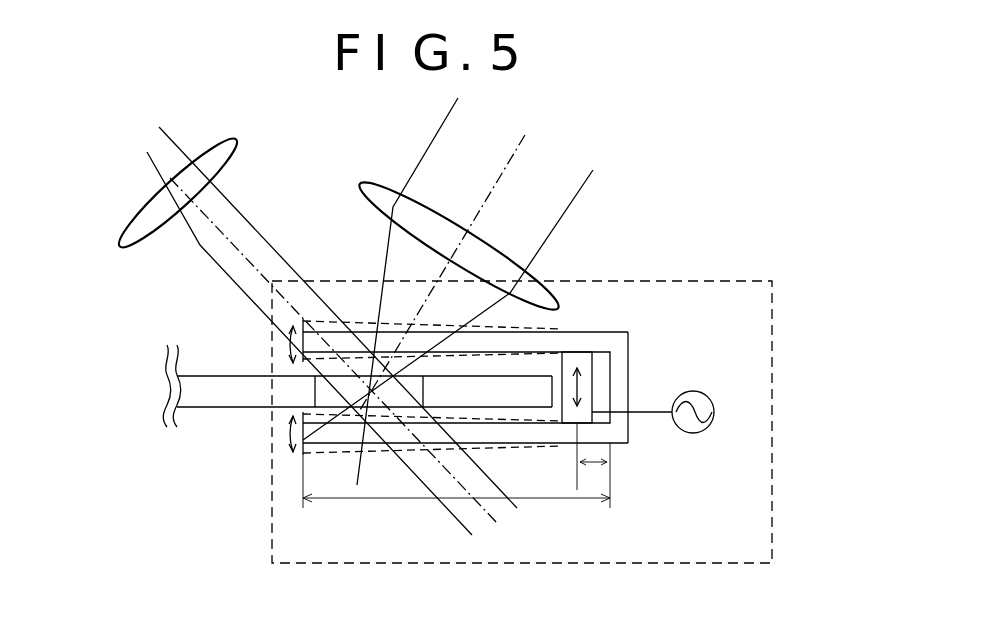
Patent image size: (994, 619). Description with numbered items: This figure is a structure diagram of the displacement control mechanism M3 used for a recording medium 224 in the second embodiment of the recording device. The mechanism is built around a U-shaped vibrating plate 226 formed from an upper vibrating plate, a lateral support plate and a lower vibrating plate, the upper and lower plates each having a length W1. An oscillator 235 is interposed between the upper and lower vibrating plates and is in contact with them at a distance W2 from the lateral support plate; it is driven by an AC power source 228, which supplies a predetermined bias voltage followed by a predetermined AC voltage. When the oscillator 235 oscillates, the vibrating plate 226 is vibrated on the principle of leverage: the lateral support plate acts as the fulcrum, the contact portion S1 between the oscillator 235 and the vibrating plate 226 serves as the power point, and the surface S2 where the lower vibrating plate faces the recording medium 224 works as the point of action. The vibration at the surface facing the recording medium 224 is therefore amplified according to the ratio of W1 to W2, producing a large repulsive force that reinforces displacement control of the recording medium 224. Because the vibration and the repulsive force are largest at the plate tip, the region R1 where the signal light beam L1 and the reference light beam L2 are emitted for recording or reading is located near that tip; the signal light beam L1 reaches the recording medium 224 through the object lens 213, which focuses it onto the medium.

The signal light beam L1 is at (568, 208).
The reference light beam L2 is at (143, 182).
The object lens 213 is at (535, 279).
The contact portion S1 is at (578, 332).
The surface S2 is at (305, 457).
The displacement control mechanism M3 is at (753, 281).
The vibrating plate 226 is at (452, 401).
The oscillator 235 is at (583, 392).
The AC power source 228 is at (715, 418).
The recording medium 224 is at (230, 408).
The region R1 is at (315, 393).
The length of the upper and lower vibrating plates W1 is at (456, 488).
The distance from the lateral support plate to the oscillator W2 is at (591, 462).